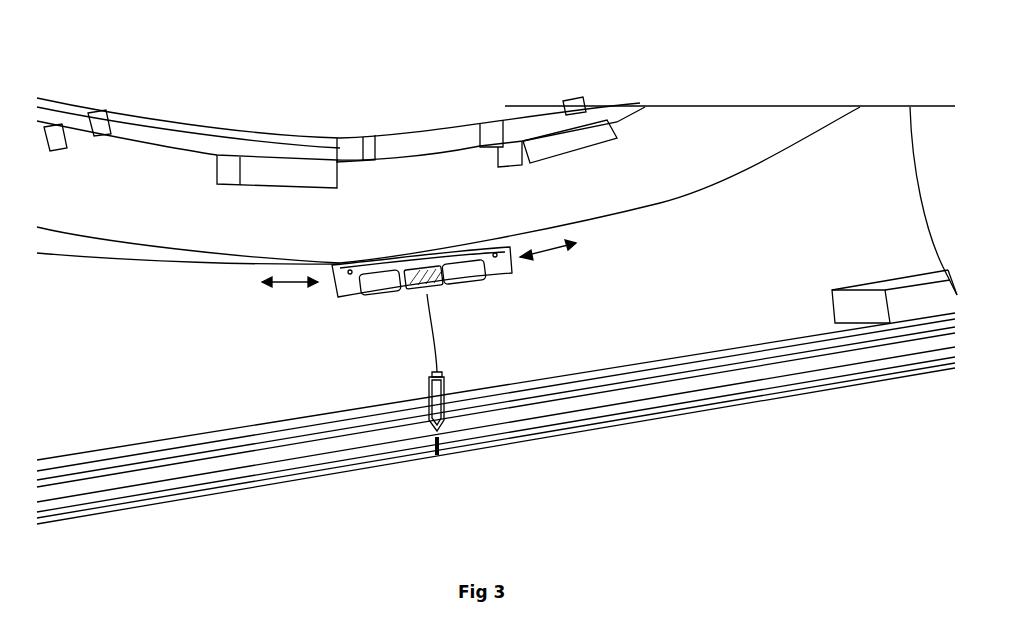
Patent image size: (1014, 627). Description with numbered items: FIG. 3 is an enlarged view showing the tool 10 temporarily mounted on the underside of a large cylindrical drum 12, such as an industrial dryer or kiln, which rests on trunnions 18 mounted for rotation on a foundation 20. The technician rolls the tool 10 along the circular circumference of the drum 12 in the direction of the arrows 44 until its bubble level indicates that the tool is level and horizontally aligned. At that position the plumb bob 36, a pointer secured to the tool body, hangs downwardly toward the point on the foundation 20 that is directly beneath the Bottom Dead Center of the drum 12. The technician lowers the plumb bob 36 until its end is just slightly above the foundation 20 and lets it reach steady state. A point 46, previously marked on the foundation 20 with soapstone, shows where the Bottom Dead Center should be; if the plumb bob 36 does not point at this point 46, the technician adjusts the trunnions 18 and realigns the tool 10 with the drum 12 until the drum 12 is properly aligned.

The tool 10 is at (470, 291).
The cylindrical drum 12 is at (160, 181).
The trunnions 18 is at (935, 160).
The foundation 20 is at (177, 488).
The plumb bob 36 is at (428, 390).
The arrows 44 is at (288, 283).
The point 46 is at (441, 443).